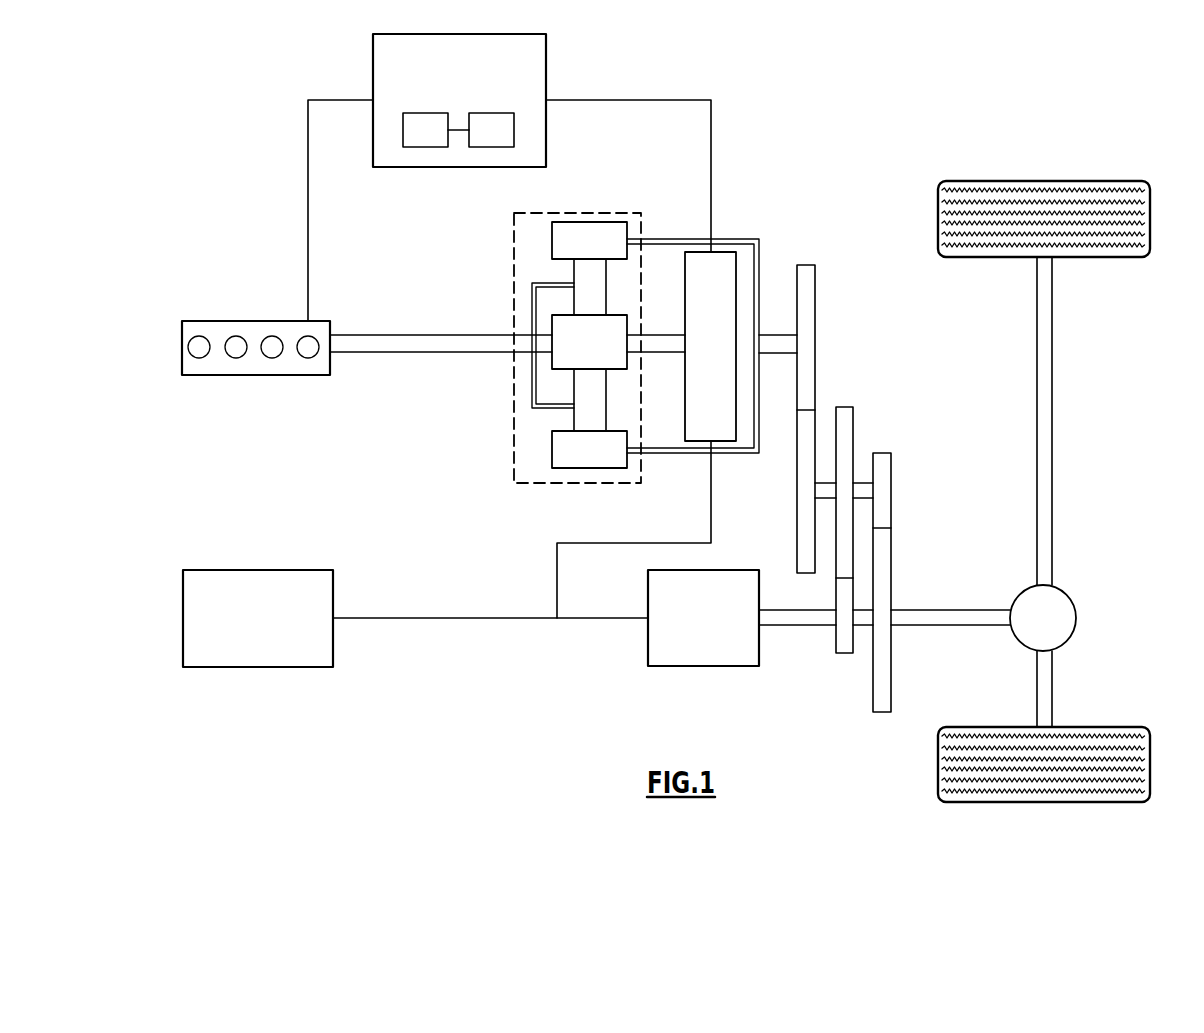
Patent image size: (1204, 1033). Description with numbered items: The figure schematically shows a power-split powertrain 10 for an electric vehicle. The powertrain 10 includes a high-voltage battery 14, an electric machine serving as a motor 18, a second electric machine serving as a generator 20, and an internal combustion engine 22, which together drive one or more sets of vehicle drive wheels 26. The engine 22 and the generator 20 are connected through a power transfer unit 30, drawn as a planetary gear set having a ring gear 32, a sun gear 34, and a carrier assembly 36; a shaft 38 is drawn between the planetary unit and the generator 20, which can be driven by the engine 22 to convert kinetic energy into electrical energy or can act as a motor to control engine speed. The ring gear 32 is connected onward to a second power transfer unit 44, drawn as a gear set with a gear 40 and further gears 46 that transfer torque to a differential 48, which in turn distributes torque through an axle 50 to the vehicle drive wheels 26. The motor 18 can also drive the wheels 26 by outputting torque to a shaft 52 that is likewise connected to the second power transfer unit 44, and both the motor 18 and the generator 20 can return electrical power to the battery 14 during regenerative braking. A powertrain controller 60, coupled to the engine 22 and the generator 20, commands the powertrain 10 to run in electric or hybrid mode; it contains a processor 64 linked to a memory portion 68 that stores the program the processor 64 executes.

The powertrain 10 is at (972, 128).
The battery 14 is at (200, 570).
The motor 18 is at (761, 651).
The generator 20 is at (690, 252).
The internal combustion engine 22 is at (192, 320).
The vehicle drive wheels 26 is at (1150, 765).
The power transfer unit 30 is at (549, 339).
The ring gear 32 is at (552, 238).
The sun gear 34 is at (552, 320).
The carrier assembly 36 is at (532, 396).
The generator shaft 38 is at (668, 335).
The first gear 40 is at (780, 330).
The second power transfer unit 44 is at (877, 488).
The gears 46 is at (891, 490).
The differential 48 is at (1072, 638).
The axle 50 is at (1053, 405).
The shaft 52 is at (806, 625).
The powertrain controller 60 is at (509, 177).
The processor 64 is at (438, 141).
The memory portion 68 is at (504, 141).